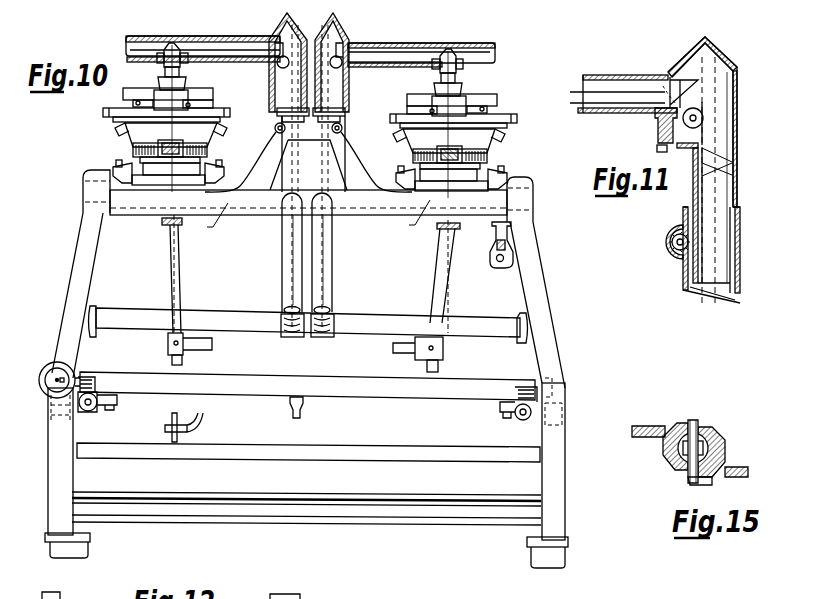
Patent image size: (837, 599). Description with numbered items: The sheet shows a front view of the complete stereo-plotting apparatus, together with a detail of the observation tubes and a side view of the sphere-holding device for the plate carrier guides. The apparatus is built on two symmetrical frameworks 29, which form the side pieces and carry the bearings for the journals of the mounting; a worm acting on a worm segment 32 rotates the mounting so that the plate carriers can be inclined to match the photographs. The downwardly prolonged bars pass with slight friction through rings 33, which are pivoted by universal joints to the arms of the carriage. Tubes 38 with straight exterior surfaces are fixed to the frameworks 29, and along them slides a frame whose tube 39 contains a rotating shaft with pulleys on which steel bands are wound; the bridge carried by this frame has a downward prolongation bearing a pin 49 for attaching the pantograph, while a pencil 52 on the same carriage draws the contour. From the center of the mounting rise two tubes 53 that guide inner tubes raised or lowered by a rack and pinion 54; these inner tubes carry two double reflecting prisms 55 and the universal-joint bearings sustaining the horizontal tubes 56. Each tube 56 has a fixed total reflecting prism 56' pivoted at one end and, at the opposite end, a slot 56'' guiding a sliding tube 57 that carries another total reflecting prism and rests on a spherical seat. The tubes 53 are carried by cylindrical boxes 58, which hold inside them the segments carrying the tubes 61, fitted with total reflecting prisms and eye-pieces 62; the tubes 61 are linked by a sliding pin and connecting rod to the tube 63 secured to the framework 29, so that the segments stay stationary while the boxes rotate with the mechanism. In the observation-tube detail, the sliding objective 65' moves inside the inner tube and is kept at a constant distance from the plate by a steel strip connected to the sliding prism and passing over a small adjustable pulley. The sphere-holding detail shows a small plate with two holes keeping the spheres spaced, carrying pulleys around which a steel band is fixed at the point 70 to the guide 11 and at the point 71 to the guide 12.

In FIG. 10, the horizontal tubes 56 is at (310, 37).
In FIG. 11, the horizontal tubes 56 is at (623, 84).
In FIG. 10, the slot 56'' is at (284, 70).
In FIG. 11, the fixed total reflecting prism 56' is at (676, 95).
In FIG. 10, the double reflecting prisms 55 is at (283, 20).
In FIG. 11, the double reflecting prisms 55 is at (708, 50).
In FIG. 10, the sliding tube 57 is at (158, 60).
In FIG. 10, the tubes 53 is at (278, 110).
In FIG. 11, the tubes 53 is at (740, 260).
In FIG. 10, the rack and pinion 54 is at (275, 128).
In FIG. 11, the rack and pinion 54 is at (674, 257).
In FIG. 10, the cylindrical boxes 58 is at (308, 154).
In FIG. 10, the tubes 61 is at (286, 281).
In FIG. 10, the eye-pieces 62 is at (284, 309).
In FIG. 10, the tube 63 is at (378, 333).
In FIG. 10, the rings 33 is at (168, 348).
In FIG. 10, the worm segment 32 is at (492, 246).
In FIG. 10, the frameworks 29 is at (88, 262).
In FIG. 10, the tubes 38 is at (93, 411).
In FIG. 10, the tube 39 is at (287, 381).
In FIG. 10, the pin 49 is at (303, 408).
In FIG. 10, the pencil 52 is at (187, 435).
In FIG. 11, the sliding objective 65' is at (736, 158).
In FIG. 15, the point 70 is at (698, 431).
In FIG. 15, the guides 12 is at (646, 443).
In FIG. 15, the point 71 is at (689, 478).
In FIG. 15, the guides 11 is at (735, 474).